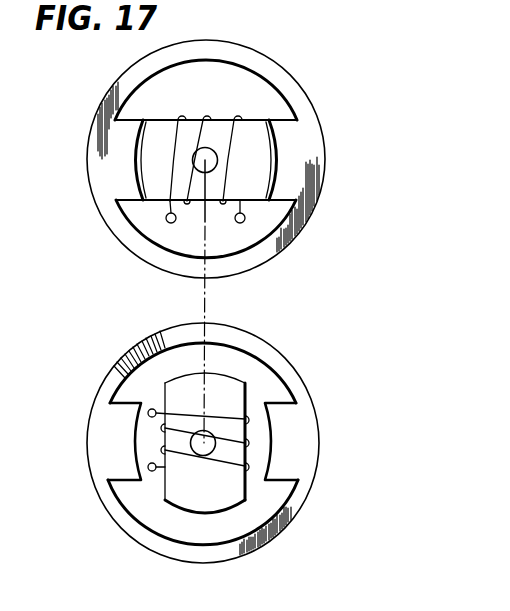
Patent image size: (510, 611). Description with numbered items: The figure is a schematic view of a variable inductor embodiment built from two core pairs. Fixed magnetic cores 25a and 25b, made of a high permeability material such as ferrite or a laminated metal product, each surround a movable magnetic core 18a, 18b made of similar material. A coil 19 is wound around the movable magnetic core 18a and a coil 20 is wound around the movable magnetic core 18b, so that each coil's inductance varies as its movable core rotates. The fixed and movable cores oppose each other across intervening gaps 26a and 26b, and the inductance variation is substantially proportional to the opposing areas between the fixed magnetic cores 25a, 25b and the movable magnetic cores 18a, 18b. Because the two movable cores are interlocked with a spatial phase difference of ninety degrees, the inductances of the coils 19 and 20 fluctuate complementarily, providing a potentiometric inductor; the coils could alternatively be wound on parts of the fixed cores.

The fixed magnetic core 25a is at (272, 61).
The movable magnetic core 18a is at (250, 120).
The gap 26a is at (146, 120).
The coil 19 is at (169, 223).
The gap 26b is at (268, 203).
The fixed magnetic core 25b is at (257, 335).
The movable magnetic core 18b is at (242, 382).
The coil 20 is at (156, 409).